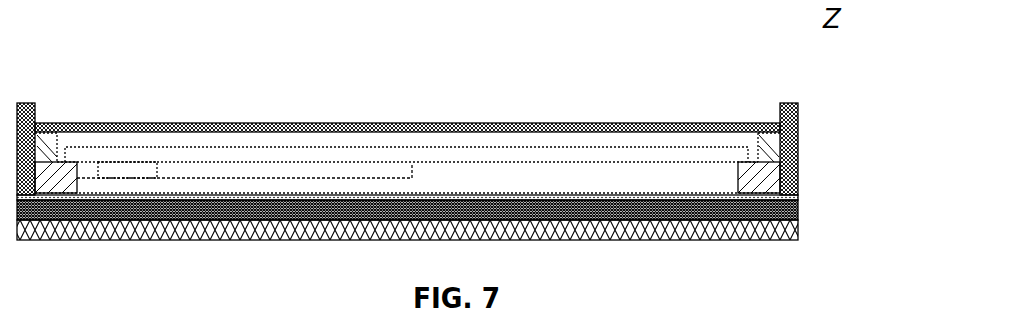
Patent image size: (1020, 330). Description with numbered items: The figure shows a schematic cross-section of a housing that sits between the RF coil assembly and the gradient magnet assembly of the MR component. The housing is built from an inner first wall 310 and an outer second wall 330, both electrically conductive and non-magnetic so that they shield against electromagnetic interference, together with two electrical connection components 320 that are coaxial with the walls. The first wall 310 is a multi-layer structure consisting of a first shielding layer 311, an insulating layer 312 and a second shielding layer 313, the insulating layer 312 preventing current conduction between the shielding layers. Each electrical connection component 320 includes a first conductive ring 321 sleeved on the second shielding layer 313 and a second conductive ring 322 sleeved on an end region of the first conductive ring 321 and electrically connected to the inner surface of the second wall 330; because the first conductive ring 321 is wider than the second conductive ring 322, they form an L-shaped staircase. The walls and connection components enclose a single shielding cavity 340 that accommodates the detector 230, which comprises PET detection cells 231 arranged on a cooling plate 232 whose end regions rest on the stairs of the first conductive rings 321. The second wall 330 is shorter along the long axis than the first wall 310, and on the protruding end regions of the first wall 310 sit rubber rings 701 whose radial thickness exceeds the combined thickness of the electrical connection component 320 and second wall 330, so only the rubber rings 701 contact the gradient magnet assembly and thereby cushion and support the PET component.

The detector 230 is at (407, 94).
The PET detection cell 231 is at (134, 125).
The cooling plate 232 is at (203, 152).
The second wall 330 is at (392, 123).
The single enclosed space 340 is at (492, 177).
The rubber ring 701 is at (805, 116).
The electrical connection component 320 is at (484, 163).
The first conductive ring 321 is at (779, 178).
The second conductive ring 322 is at (778, 145).
The first wall 310 is at (470, 222).
The first shielding layer 311 is at (796, 238).
The insulating layer 312 is at (797, 214).
The second shielding layer 313 is at (795, 201).